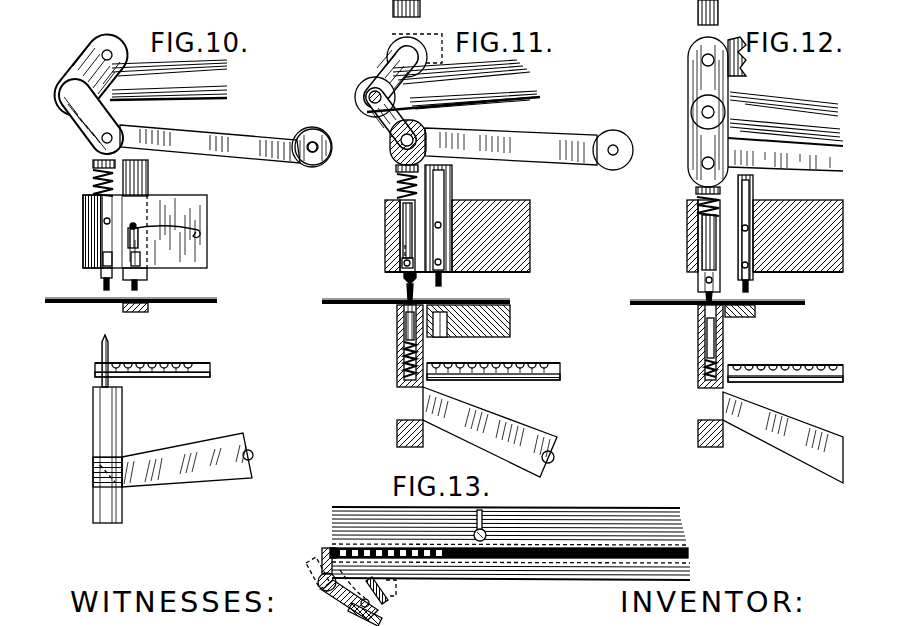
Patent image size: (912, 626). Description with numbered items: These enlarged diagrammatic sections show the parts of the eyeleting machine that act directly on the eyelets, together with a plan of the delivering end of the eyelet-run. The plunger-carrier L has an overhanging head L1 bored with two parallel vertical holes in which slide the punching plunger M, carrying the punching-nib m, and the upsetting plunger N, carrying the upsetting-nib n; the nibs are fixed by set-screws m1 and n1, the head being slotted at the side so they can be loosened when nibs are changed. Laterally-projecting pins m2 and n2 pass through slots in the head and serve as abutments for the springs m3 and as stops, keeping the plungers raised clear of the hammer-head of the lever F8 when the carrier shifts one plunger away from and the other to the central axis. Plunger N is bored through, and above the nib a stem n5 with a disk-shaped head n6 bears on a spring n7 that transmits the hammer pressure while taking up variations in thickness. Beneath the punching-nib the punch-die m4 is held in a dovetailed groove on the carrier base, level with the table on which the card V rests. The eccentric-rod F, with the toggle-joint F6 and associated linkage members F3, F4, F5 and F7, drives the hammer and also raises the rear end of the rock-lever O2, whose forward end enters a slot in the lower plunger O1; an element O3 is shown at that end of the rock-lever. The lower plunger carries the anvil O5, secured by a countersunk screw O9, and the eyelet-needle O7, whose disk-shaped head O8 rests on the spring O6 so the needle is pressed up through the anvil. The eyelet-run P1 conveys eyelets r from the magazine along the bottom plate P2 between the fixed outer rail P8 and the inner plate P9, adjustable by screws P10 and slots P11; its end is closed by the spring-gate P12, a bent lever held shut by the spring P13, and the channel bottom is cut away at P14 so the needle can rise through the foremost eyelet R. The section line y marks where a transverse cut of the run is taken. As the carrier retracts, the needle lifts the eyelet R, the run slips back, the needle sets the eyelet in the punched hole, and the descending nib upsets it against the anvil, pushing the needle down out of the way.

In FIG. 12, the housing A is at (734, 38).
In FIG. 10, the eccentric-rod F is at (215, 98).
In FIG. 11, the eccentric-rod F is at (525, 104).
In FIG. 12, the eccentric-rod F is at (790, 106).
In FIG. 11, the pivot stud F3 is at (396, 45).
In FIG. 11, the link F4 is at (390, 65).
In FIG. 11, the link plate F5 is at (376, 114).
In FIG. 12, the link plate F5 is at (692, 140).
In FIG. 10, the toggle-joint F6 is at (61, 85).
In FIG. 11, the toggle-joint F6 is at (368, 97).
In FIG. 12, the toggle-joint F6 is at (700, 113).
In FIG. 11, the link F7 is at (382, 128).
In FIG. 10, the hammer lever F8 is at (85, 158).
In FIG. 11, the hammer lever F8 is at (463, 124).
In FIG. 12, the hammer lever F8 is at (690, 182).
In FIG. 10, the punching plunger M is at (148, 170).
In FIG. 11, the punching plunger M is at (453, 182).
In FIG. 12, the punching plunger M is at (755, 184).
In FIG. 10, the punching-nib m is at (141, 290).
In FIG. 11, the punching-nib m is at (442, 286).
In FIG. 12, the punching-nib m is at (748, 290).
In FIG. 11, the set-screw m1 is at (475, 280).
In FIG. 10, the laterally-projecting pin m2 is at (165, 197).
In FIG. 11, the laterally-projecting pin m2 is at (460, 200).
In FIG. 12, the laterally-projecting pin m2 is at (798, 236).
In FIG. 10, the spring m3 is at (186, 226).
In FIG. 10, the punch-die m4 is at (148, 313).
In FIG. 11, the punch-die m4 is at (452, 320).
In FIG. 12, the punch-die m4 is at (755, 318).
In FIG. 11, the upsetting plunger N is at (385, 211).
In FIG. 12, the upsetting plunger N is at (696, 288).
In FIG. 10, the upsetting-nib n is at (100, 290).
In FIG. 11, the upsetting-nib n is at (402, 288).
In FIG. 12, the upsetting-nib n is at (697, 318).
In FIG. 11, the set-screw n1 is at (398, 264).
In FIG. 10, the laterally-projecting pin n2 is at (85, 212).
In FIG. 11, the laterally-projecting pin n2 is at (386, 223).
In FIG. 12, the laterally-projecting pin n2 is at (690, 262).
In FIG. 10, the stem n5 is at (93, 172).
In FIG. 11, the stem n5 is at (396, 184).
In FIG. 12, the stem n5 is at (708, 201).
In FIG. 11, the disk-shaped head n6 is at (395, 168).
In FIG. 10, the spring n7 is at (92, 186).
In FIG. 11, the spring n7 is at (394, 191).
In FIG. 11, the plunger-carrier L is at (510, 328).
In FIG. 10, the overhanging head of plunger-carrier L1 is at (85, 228).
In FIG. 11, the overhanging head of plunger-carrier L1 is at (384, 228).
In FIG. 12, the overhanging head of plunger-carrier L1 is at (688, 232).
In FIG. 10, the lower plunger O1 is at (93, 418).
In FIG. 11, the lower plunger O1 is at (397, 437).
In FIG. 12, the lower plunger O1 is at (698, 440).
In FIG. 10, the rock-lever O2 is at (175, 452).
In FIG. 11, the rock-lever O2 is at (502, 424).
In FIG. 12, the rock-lever O2 is at (795, 470).
In FIG. 10, the pin O3 is at (253, 454).
In FIG. 11, the pin O3 is at (555, 457).
In FIG. 11, the anvil O5 is at (397, 315).
In FIG. 12, the anvil O5 is at (710, 346).
In FIG. 11, the spring O6 is at (400, 360).
In FIG. 12, the spring O6 is at (700, 375).
In FIG. 10, the eyelet-needle O7 is at (101, 352).
In FIG. 11, the disk-shaped head O8 is at (418, 343).
In FIG. 12, the disk-shaped head O8 is at (702, 357).
In FIG. 10, the countersunk screw O9 is at (105, 392).
In FIG. 10, the eyelet-run P1 is at (201, 363).
In FIG. 11, the eyelet-run P1 is at (562, 374).
In FIG. 12, the eyelet-run P1 is at (840, 366).
In FIG. 13, the eyelet-run P1 is at (545, 577).
In FIG. 11, the bottom plate P2 is at (561, 382).
In FIG. 13, the bottom plate P2 is at (652, 515).
In FIG. 13, the outer rail P8 is at (520, 576).
In FIG. 13, the inner plate P9 is at (598, 530).
In FIG. 13, the screw P10 is at (475, 546).
In FIG. 13, the slot P11 is at (490, 516).
In FIG. 13, the spring-gate P12 is at (322, 548).
In FIG. 13, the spring P13 is at (392, 592).
In FIG. 10, the cut-away P14 is at (96, 369).
In FIG. 11, the cut-away P14 is at (440, 386).
In FIG. 12, the cut-away P14 is at (745, 389).
In FIG. 13, the cut-away P14 is at (345, 530).
In FIG. 10, the eyelet R is at (109, 370).
In FIG. 11, the eyelet R is at (424, 290).
In FIG. 12, the eyelet R is at (700, 298).
In FIG. 13, the eyelet R is at (325, 545).
In FIG. 10, the eyelets r is at (174, 364).
In FIG. 11, the eyelets r is at (527, 364).
In FIG. 12, the eyelets r is at (802, 366).
In FIG. 13, the eyelets r is at (370, 540).
In FIG. 10, the card V is at (212, 300).
In FIG. 11, the card V is at (336, 306).
In FIG. 12, the card V is at (646, 306).
In FIG. 13, the section line y is at (480, 600).